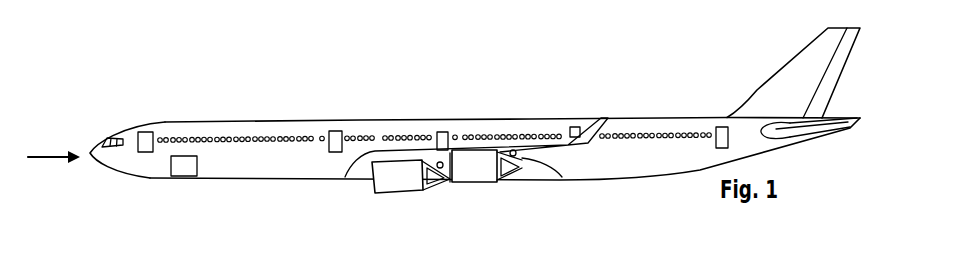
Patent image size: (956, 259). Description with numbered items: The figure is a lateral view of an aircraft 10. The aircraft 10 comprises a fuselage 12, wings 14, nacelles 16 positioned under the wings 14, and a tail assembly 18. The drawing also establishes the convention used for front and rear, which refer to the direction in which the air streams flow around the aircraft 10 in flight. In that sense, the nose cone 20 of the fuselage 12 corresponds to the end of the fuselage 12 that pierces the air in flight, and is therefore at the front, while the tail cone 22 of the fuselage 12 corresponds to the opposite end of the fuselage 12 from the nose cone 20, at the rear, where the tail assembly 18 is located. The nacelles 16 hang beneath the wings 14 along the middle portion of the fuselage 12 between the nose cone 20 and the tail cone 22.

The aircraft 10 is at (228, 103).
The fuselage 12 is at (360, 118).
The wings 14 is at (531, 143).
The nacelles 16 is at (428, 193).
The tail assembly 18 is at (803, 47).
The nose cone 20 is at (92, 152).
The tail cone 22 is at (838, 131).